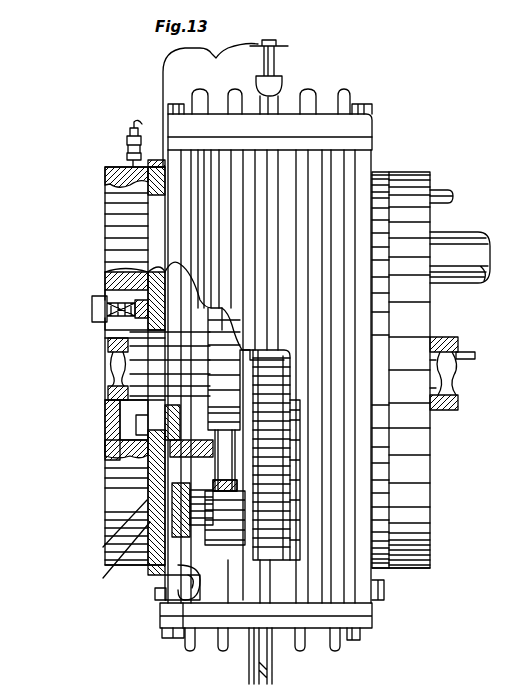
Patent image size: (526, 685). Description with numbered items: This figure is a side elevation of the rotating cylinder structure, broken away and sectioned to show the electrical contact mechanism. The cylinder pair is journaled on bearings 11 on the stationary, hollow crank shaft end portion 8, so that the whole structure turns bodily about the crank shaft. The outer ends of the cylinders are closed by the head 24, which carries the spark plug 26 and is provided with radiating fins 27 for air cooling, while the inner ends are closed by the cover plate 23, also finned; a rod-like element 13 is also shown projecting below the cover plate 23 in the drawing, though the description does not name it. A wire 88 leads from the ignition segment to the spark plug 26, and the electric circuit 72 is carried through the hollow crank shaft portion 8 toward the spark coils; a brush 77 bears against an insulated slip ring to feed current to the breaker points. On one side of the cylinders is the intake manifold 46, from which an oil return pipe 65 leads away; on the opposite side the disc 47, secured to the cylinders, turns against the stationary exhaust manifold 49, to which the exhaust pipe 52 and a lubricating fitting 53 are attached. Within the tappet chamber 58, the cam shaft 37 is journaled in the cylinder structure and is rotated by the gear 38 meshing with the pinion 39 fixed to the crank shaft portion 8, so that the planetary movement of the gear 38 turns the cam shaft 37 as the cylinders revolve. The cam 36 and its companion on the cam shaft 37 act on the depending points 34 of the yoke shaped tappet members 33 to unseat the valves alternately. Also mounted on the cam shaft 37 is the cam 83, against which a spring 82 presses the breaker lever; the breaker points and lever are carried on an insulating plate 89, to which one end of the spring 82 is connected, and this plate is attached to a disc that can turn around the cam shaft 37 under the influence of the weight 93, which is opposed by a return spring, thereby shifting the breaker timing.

The wire 88 is at (216, 58).
The spark plug 26 is at (283, 62).
The head 24 is at (372, 124).
The oil return pipe 65 is at (125, 140).
The lubricating fitting 53 is at (452, 196).
The exhaust pipe 52 is at (448, 240).
The manifold 46 is at (110, 234).
The tappet chamber 58 is at (130, 272).
The brush 77 is at (92, 309).
The tappet member 33 is at (208, 320).
The electric circuit 72 is at (474, 362).
The bearing 11 is at (106, 418).
The crank shaft end portion 8 is at (452, 408).
The pinion 39 is at (290, 424).
The gear 38 is at (270, 468).
The depending point 34 is at (148, 497).
The cam 83 is at (106, 540).
The weight 93 is at (73, 528).
The exhaust manifold 49 is at (425, 507).
The cam shaft 37 is at (119, 559).
The disc 47 is at (378, 570).
The insulating plate 89 is at (165, 600).
The spring 82 is at (192, 595).
The cover plate 23 is at (206, 624).
The cam 36 is at (233, 563).
The rod 13 is at (278, 656).
The radiating fins 27 is at (345, 640).